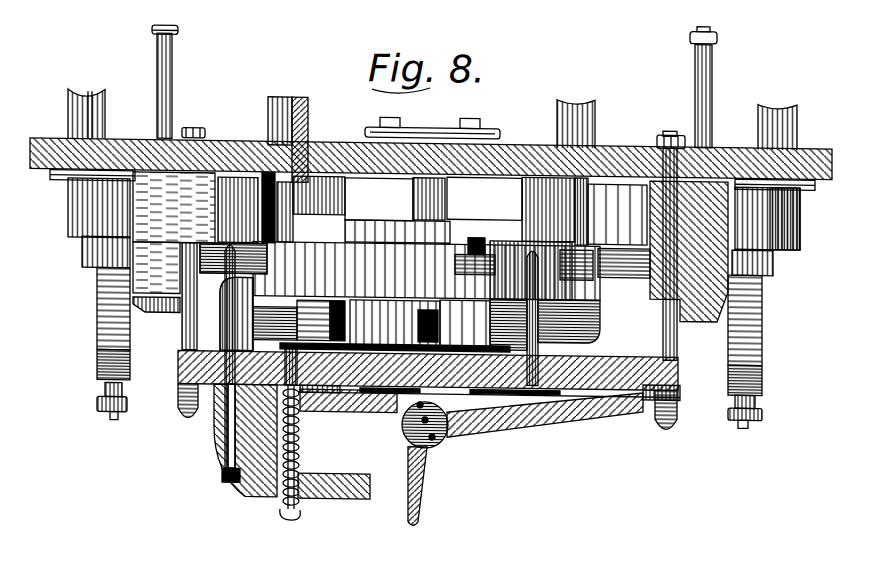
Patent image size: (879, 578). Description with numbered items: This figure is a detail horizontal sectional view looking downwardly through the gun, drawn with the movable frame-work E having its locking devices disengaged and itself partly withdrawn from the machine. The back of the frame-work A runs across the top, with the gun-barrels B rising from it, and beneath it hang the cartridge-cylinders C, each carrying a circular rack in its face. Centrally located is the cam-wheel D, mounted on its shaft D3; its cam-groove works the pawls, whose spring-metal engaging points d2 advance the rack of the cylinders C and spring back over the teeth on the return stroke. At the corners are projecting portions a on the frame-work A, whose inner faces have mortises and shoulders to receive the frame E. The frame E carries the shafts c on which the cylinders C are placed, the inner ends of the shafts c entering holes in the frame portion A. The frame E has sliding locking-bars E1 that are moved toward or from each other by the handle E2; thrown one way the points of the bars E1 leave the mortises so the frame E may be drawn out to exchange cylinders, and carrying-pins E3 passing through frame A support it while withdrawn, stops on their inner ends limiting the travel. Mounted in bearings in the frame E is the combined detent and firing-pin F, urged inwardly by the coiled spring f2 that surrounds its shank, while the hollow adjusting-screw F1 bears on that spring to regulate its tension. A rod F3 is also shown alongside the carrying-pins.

The back of the frame-work A is at (510, 146).
The gun-barrels B is at (105, 112).
The cartridge-cylinders C is at (82, 206).
The cam-wheel D is at (620, 295).
The shaft D3 is at (432, 210).
The engaging points d2 is at (473, 231).
The movable frame-work E is at (97, 302).
The sliding locking-bars E1 is at (328, 393).
The handle E2 is at (418, 462).
The carrying-pins E3 is at (172, 58).
The combined detent and firing-pin F is at (118, 410).
The hollow adjusting-screw F1 is at (757, 399).
The rod F3 is at (663, 334).
The projecting portions a is at (700, 320).
The shafts c is at (327, 338).
The coiled spring f2 is at (298, 432).